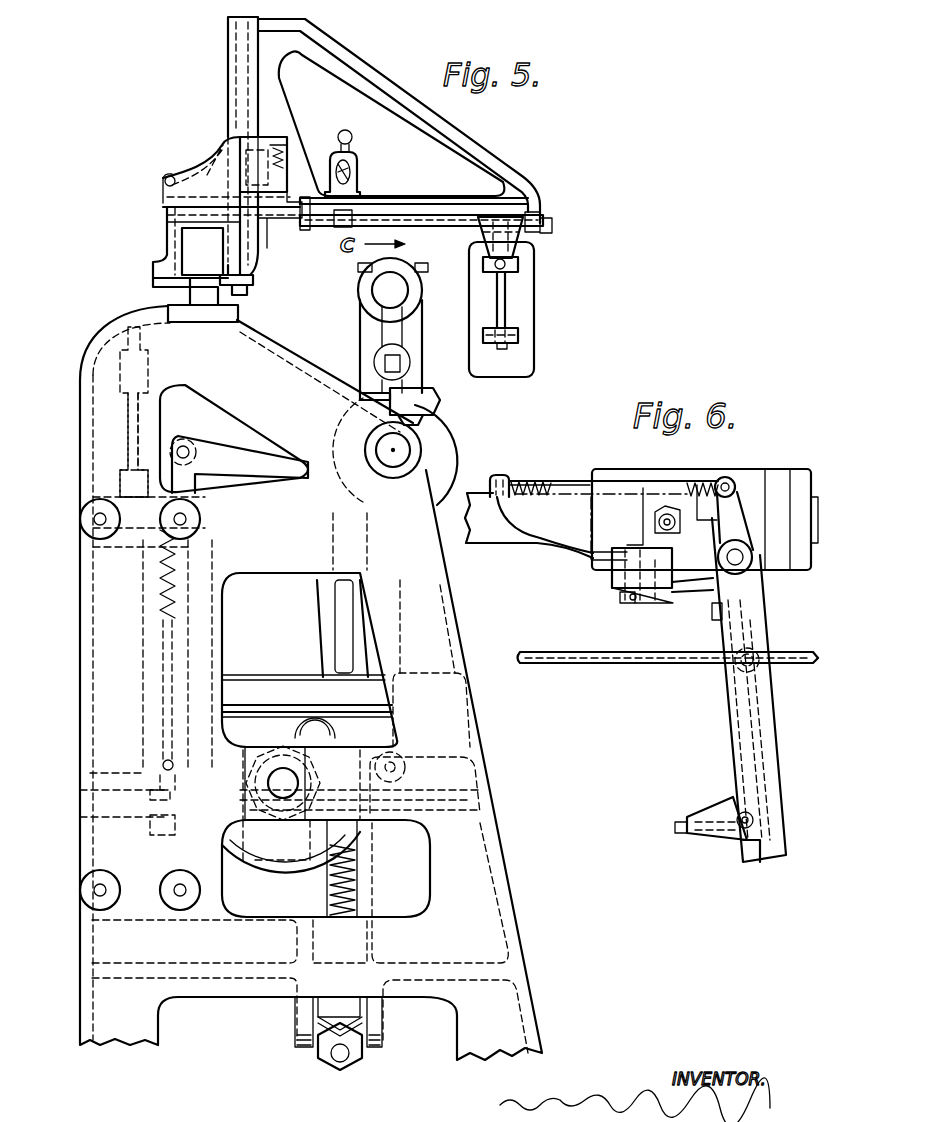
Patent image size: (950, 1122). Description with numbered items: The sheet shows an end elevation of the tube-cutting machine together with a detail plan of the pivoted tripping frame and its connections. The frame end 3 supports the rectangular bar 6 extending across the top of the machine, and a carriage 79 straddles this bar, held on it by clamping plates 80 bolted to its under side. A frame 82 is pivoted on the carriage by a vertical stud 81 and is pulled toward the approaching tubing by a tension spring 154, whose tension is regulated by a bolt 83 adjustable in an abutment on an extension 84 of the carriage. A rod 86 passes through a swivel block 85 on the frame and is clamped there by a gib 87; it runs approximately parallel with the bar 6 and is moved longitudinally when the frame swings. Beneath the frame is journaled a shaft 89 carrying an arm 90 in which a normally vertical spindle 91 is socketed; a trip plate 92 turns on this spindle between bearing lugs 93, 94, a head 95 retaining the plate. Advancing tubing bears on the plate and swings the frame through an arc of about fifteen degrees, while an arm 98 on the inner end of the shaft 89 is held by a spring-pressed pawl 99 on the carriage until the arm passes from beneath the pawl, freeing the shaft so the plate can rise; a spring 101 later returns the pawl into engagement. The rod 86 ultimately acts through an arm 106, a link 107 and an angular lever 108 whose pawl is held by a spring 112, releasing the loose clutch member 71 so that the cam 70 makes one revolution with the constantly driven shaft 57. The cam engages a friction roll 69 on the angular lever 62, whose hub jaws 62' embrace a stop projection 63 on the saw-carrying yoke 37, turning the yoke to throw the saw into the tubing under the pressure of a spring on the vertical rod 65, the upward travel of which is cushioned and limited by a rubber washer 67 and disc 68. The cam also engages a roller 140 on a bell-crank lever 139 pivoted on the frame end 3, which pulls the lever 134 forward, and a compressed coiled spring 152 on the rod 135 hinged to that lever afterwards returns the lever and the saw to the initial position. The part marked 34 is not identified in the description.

In FIG. 5, the frame end 3 is at (520, 930).
In FIG. 5, the bar 6 is at (190, 243).
In FIG. 6, the bar 6 is at (488, 530).
In FIG. 5, the crank pin bearing 34 is at (393, 290).
In FIG. 5, the yoke 37 is at (367, 331).
In FIG. 5, the shaft 57 is at (270, 850).
In FIG. 5, the angular lever 62 is at (349, 568).
In FIG. 5, the jaws 62' is at (412, 412).
In FIG. 5, the stop projection 63 is at (421, 401).
In FIG. 5, the vertical rod 65 is at (195, 620).
In FIG. 5, the rubber washer 67 is at (150, 797).
In FIG. 5, the disc 68 is at (148, 818).
In FIG. 5, the friction roll 69 is at (468, 780).
In FIG. 5, the cam 70 is at (468, 808).
In FIG. 5, the loose clutch member 71 is at (305, 860).
In FIG. 5, the carriage 79 is at (168, 212).
In FIG. 5, the clamping plates 80 is at (156, 282).
In FIG. 5, the vertical stud 81 is at (237, 84).
In FIG. 5, the frame 82 is at (383, 50).
In FIG. 6, the frame 82 is at (777, 860).
In FIG. 5, the bolt 83 is at (165, 183).
In FIG. 6, the bolt 83 is at (508, 478).
In FIG. 5, the extension 84 is at (190, 167).
In FIG. 5, the swivel block 85 is at (352, 140).
In FIG. 5, the rod 86 is at (351, 178).
In FIG. 6, the rod 86 is at (650, 666).
In FIG. 5, the gib 87 is at (358, 157).
In FIG. 5, the shaft 89 is at (425, 228).
In FIG. 6, the shaft 89 is at (736, 777).
In FIG. 5, the arm 90 is at (524, 250).
In FIG. 6, the arm 90 is at (700, 843).
In FIG. 5, the spindle 91 is at (505, 303).
In FIG. 5, the trip plate 92 is at (534, 318).
In FIG. 6, the trip plate 92 is at (770, 807).
In FIG. 5, the upper bearing lug 93 is at (520, 266).
In FIG. 5, the bearing lug 94 is at (518, 335).
In FIG. 5, the head 95 is at (505, 348).
In FIG. 6, the arm 98 is at (692, 600).
In FIG. 5, the pawl 99 is at (285, 185).
In FIG. 6, the pawl 99 is at (660, 606).
In FIG. 5, the spring 101 is at (279, 142).
In FIG. 6, the spring 101 is at (617, 598).
In FIG. 5, the arm 106 is at (128, 358).
In FIG. 5, the link 107 is at (130, 420).
In FIG. 5, the angular lever 108 is at (118, 472).
In FIG. 5, the spring 112 is at (160, 585).
In FIG. 5, the lever 134 is at (330, 580).
In FIG. 5, the rod 135 is at (338, 1058).
In FIG. 5, the bell-crank lever 139 is at (382, 660).
In FIG. 5, the roller 140 is at (292, 712).
In FIG. 5, the coiled spring 152 is at (358, 880).
In FIG. 6, the spring 154 is at (552, 480).